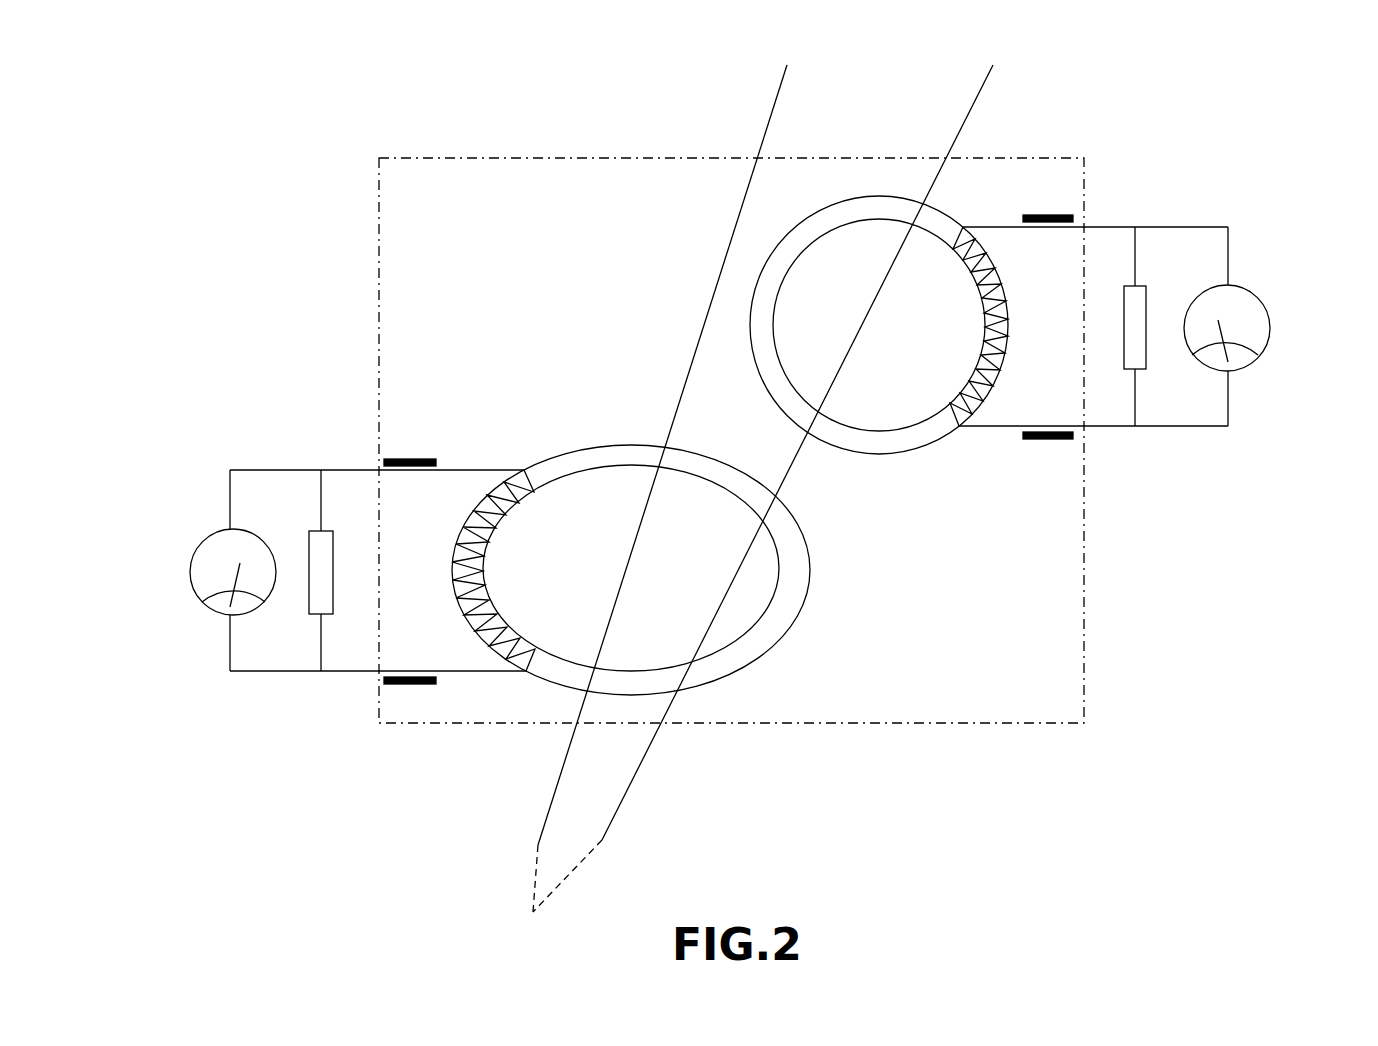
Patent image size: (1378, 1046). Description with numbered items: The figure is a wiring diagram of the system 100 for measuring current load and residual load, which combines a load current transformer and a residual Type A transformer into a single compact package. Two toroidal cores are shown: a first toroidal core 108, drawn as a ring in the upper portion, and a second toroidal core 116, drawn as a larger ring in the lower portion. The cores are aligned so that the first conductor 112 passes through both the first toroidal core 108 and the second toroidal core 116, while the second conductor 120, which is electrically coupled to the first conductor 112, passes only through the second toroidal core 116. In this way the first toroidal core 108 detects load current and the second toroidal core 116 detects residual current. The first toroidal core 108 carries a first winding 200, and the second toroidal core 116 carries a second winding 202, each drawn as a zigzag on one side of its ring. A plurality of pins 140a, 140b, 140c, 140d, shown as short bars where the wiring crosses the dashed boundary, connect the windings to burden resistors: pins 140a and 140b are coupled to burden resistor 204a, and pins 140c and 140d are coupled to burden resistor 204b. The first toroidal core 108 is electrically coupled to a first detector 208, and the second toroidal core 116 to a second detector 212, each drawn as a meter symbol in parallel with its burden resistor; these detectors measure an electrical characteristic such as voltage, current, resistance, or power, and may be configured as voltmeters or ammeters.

The system for measuring current load and residual load 100 is at (364, 144).
The first toroidal core 108 is at (848, 206).
The first conductor 112 is at (776, 477).
The second toroidal core 116 is at (587, 447).
The second conductor 120 is at (672, 477).
The pin 140a is at (1047, 207).
The pin 140b is at (1048, 449).
The pin 140c is at (409, 449).
The pin 140d is at (410, 693).
The first winding 200 is at (973, 326).
The second winding 202 is at (493, 570).
The burden resistor 204a is at (1159, 302).
The burden resistor 204b is at (296, 545).
The first detector 208 is at (1263, 303).
The second detector 212 is at (198, 545).